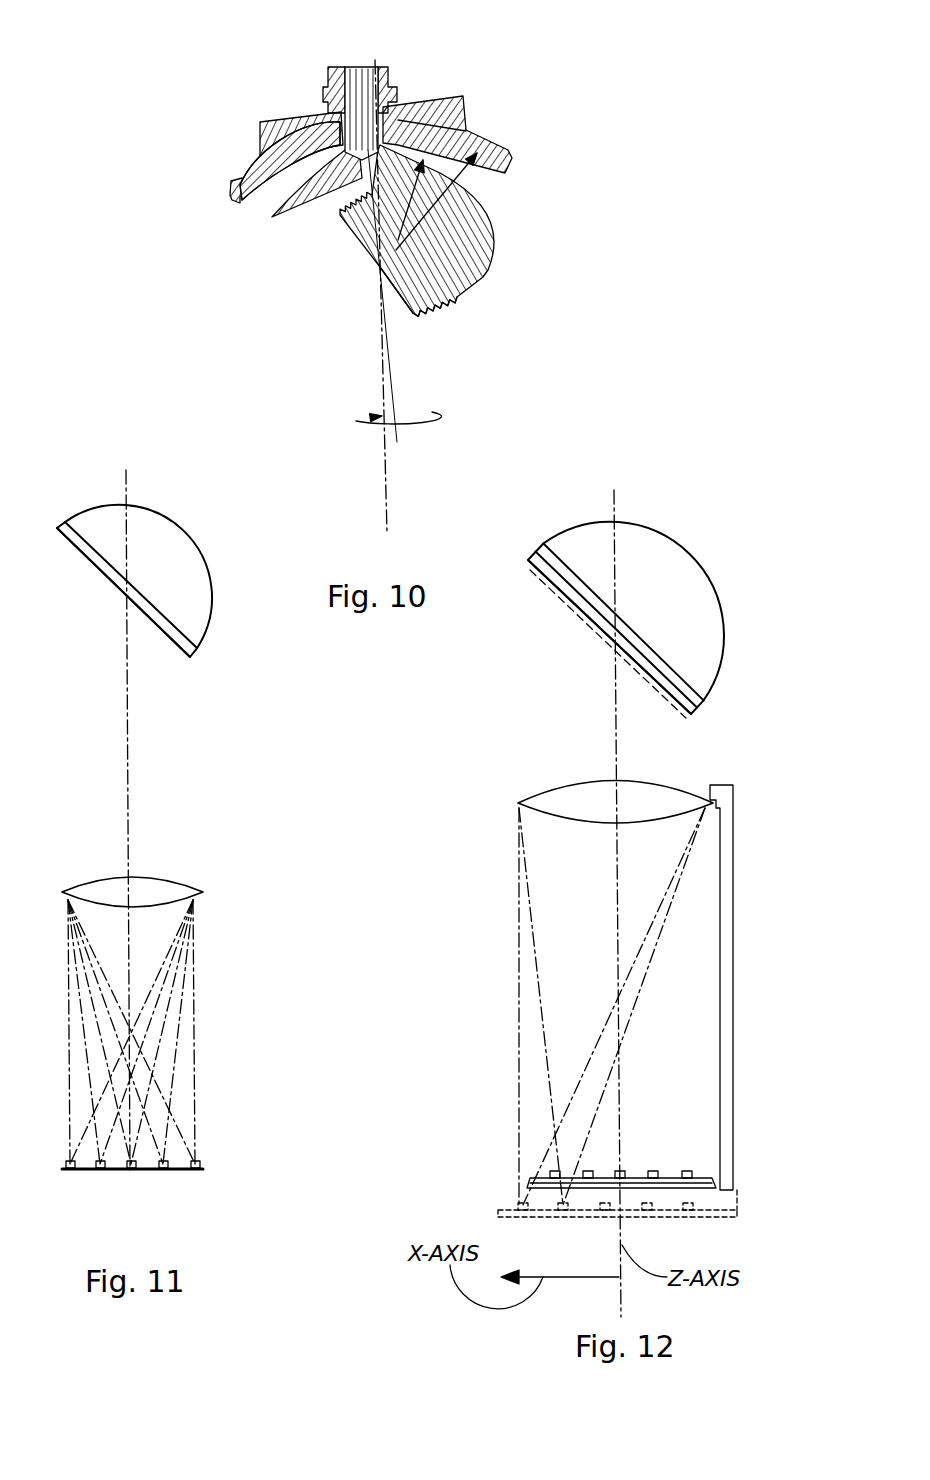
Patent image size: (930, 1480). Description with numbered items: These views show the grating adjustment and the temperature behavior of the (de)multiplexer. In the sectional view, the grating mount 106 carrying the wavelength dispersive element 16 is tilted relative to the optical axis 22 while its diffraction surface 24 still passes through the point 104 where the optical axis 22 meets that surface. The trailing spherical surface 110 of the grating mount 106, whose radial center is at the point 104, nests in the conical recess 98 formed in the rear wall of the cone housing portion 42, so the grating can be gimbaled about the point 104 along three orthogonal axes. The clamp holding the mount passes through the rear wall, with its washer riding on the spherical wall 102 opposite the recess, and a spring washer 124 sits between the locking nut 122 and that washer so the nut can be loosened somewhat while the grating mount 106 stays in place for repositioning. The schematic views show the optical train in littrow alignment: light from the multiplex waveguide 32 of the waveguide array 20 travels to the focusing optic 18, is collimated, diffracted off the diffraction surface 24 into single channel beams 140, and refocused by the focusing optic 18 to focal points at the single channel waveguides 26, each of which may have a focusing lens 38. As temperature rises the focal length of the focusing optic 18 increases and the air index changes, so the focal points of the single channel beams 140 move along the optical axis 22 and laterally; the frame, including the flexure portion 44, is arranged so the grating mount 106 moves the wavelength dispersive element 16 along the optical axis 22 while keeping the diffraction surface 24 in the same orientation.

In FIG. 10, the wavelength dispersive element 16 is at (423, 302).
In FIG. 11, the wavelength dispersive element 16 is at (172, 623).
In FIG. 12, the wavelength dispersive element 16 is at (673, 672).
In FIG. 11, the focusing optic 18 is at (92, 887).
In FIG. 12, the focusing optic 18 is at (665, 793).
In FIG. 11, the waveguide array 20 is at (135, 1148).
In FIG. 12, the waveguide array 20 is at (644, 1144).
In FIG. 10, the optical axis 22 is at (387, 495).
In FIG. 11, the optical axis 22 is at (130, 800).
In FIG. 12, the optical axis 22 is at (615, 767).
In FIG. 10, the diffraction surface 24 is at (395, 310).
In FIG. 11, the diffraction surface 24 is at (177, 647).
In FIG. 12, the diffraction surface 24 is at (572, 590).
In FIG. 11, the single channel waveguides 26 is at (70, 1172).
In FIG. 12, the single channel waveguides 26 is at (683, 1175).
In FIG. 11, the multiplex waveguide 32 is at (130, 1172).
In FIG. 11, the focusing lens 38 is at (149, 1172).
In FIG. 10, the cone housing portion 42 is at (238, 195).
In FIG. 12, the flexure portion 44 is at (728, 1010).
In FIG. 10, the conical recess 98 is at (485, 175).
In FIG. 10, the spherical wall 102 is at (257, 168).
In FIG. 10, the point 104 is at (380, 268).
In FIG. 10, the grating mount 106 is at (457, 240).
In FIG. 10, the trailing spherical surface 110 is at (479, 150).
In FIG. 10, the locking nut 122 is at (393, 64).
In FIG. 10, the spring washer 124 is at (398, 90).
In FIG. 11, the single channel beams 140 is at (68, 1107).
In FIG. 12, the single channel beams 140 is at (520, 1128).